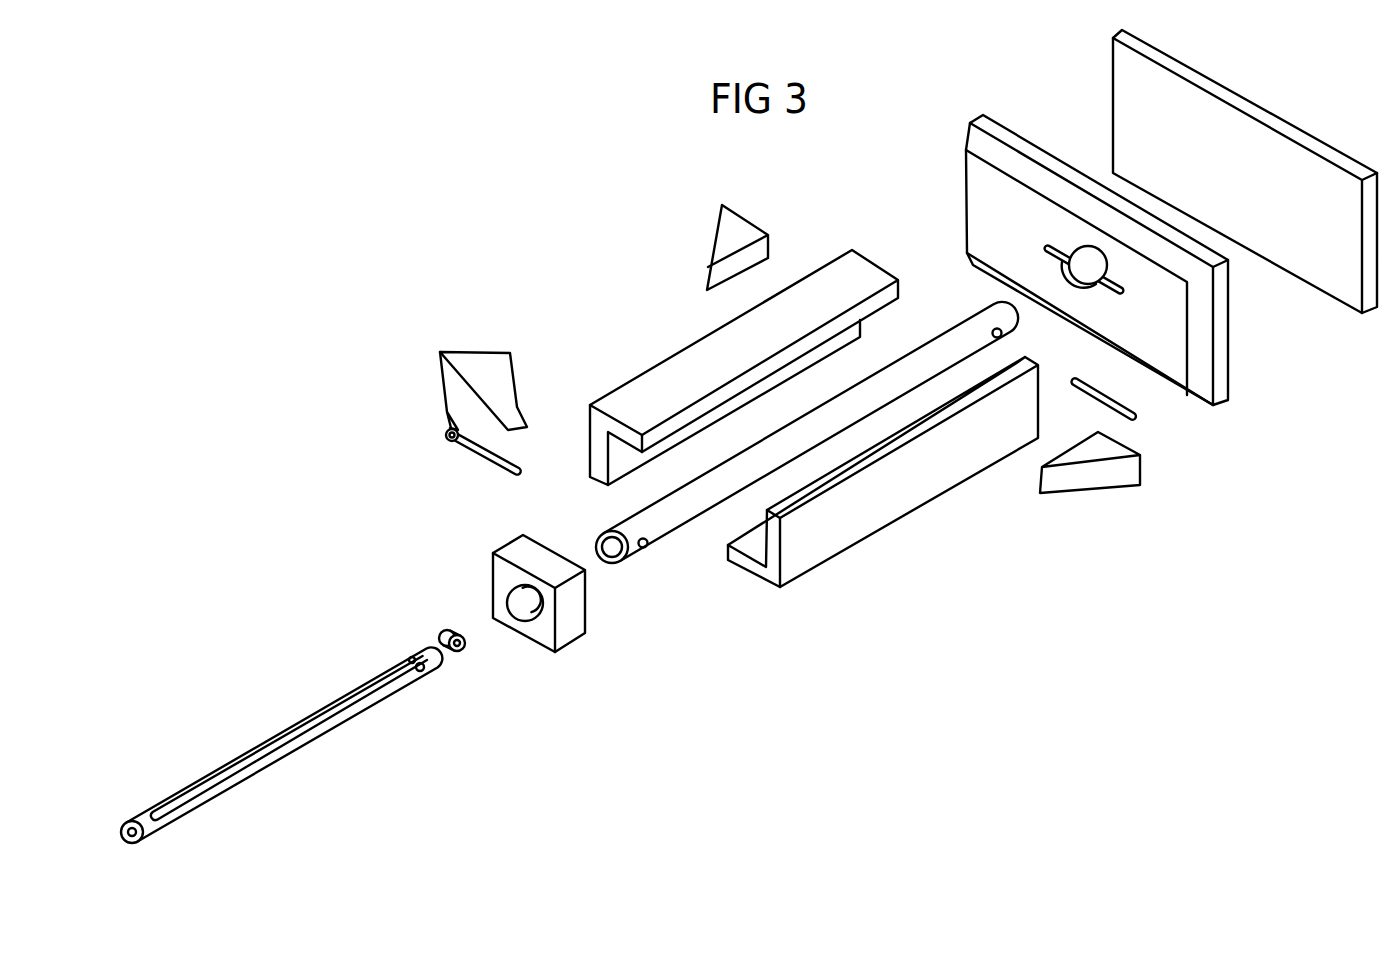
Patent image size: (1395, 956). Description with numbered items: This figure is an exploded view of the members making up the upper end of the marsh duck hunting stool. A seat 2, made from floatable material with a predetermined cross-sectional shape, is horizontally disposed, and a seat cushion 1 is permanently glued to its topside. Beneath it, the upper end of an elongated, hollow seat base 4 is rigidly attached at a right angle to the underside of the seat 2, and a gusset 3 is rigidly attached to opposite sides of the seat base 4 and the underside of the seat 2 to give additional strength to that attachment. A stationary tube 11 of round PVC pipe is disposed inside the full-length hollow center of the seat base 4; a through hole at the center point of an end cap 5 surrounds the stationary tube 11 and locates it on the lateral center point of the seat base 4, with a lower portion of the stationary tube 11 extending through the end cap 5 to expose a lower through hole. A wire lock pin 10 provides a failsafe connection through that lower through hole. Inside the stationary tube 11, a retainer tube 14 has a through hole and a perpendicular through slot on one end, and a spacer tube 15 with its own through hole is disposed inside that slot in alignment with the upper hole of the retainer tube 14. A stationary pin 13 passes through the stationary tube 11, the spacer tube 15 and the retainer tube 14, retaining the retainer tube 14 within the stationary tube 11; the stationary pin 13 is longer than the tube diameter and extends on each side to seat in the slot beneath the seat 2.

The seat cushion 1 is at (1113, 97).
The seat 2 is at (966, 199).
The gusset 3 is at (703, 255).
The seat base 4 is at (677, 355).
The end cap 5 is at (573, 642).
The wire lock pin 10 is at (440, 395).
The stationary tube 11 is at (635, 553).
The stationary pin 13 is at (1016, 352).
The retainer tube 14 is at (348, 717).
The spacer tube 15 is at (463, 647).